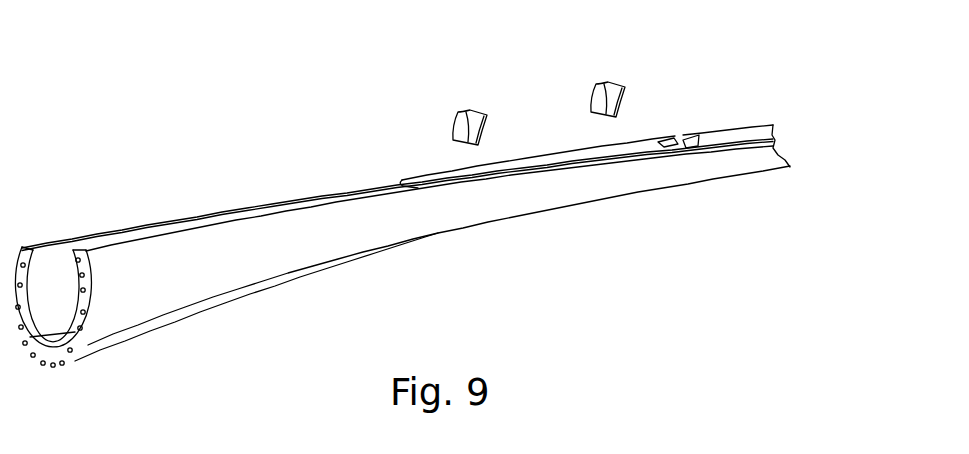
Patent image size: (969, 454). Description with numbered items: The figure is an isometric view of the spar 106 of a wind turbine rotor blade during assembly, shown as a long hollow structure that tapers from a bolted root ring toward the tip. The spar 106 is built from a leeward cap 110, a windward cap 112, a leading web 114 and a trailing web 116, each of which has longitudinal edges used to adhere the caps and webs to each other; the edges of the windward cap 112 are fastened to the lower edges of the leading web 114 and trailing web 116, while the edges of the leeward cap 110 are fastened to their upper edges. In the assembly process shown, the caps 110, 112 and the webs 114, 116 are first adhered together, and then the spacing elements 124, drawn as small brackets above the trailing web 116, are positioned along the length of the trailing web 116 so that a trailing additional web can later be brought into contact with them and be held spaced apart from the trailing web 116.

The spar 106 is at (200, 173).
The leeward cap 110 is at (68, 303).
The windward cap 112 is at (150, 303).
The leading web 114 is at (97, 347).
The trailing web 116 is at (640, 147).
The spacing elements 124 is at (466, 128).